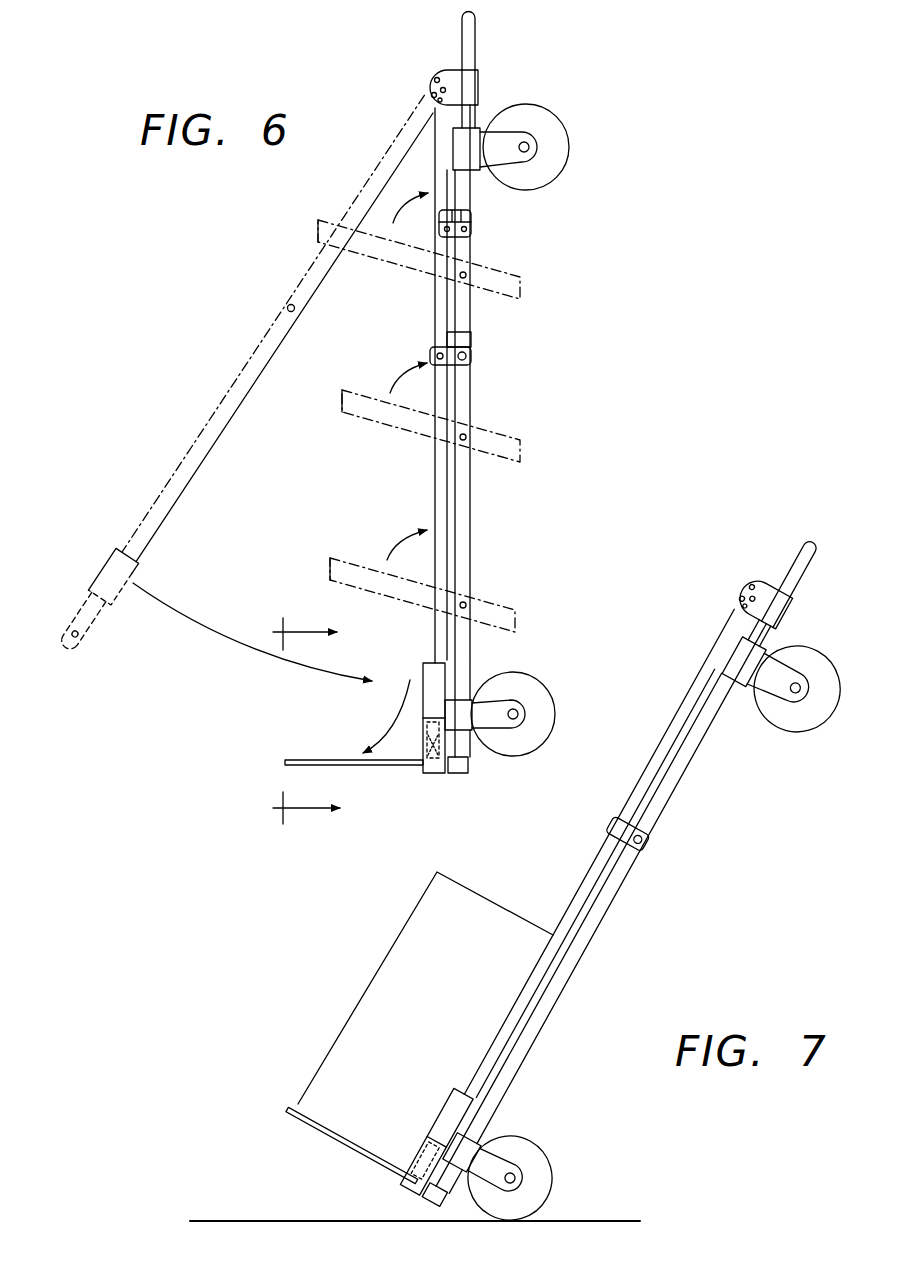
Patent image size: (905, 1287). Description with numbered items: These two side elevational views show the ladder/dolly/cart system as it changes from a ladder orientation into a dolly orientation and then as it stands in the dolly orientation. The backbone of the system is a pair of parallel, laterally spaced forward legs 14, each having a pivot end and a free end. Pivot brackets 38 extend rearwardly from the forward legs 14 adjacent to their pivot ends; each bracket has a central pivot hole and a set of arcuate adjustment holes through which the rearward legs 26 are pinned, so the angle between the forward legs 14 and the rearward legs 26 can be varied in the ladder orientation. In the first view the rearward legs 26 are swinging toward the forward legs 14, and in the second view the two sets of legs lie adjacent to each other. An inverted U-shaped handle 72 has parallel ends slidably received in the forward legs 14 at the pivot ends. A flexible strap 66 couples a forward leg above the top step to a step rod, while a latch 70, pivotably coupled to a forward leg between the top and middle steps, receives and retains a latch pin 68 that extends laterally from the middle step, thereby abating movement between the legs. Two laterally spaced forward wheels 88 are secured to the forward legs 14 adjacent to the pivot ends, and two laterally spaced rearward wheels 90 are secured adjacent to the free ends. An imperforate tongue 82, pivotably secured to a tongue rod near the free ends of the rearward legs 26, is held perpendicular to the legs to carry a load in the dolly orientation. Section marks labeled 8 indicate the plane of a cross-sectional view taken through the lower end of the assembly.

In FIG. 6, the forward legs 14 is at (471, 505).
In FIG. 6, the pivot brackets 38 is at (478, 86).
In FIG. 6, the forward wheels 88 is at (560, 138).
In FIG. 6, the flexible strap 66 is at (471, 226).
In FIG. 6, the latch 70 is at (471, 336).
In FIG. 6, the latch pin 68 is at (468, 364).
In FIG. 6, the rearward legs 26 is at (232, 383).
In FIG. 6, the rearward wheels 90 is at (545, 685).
In FIG. 7, the rearward wheels 90 is at (560, 1160).
In FIG. 6, the imperforate tongue 82 is at (318, 760).
In FIG. 7, the imperforate tongue 82 is at (313, 1107).
In FIG. 6, the section line 8- 8 is at (297, 723).
In FIG. 7, the inverted U-shaped handle 72 is at (808, 545).